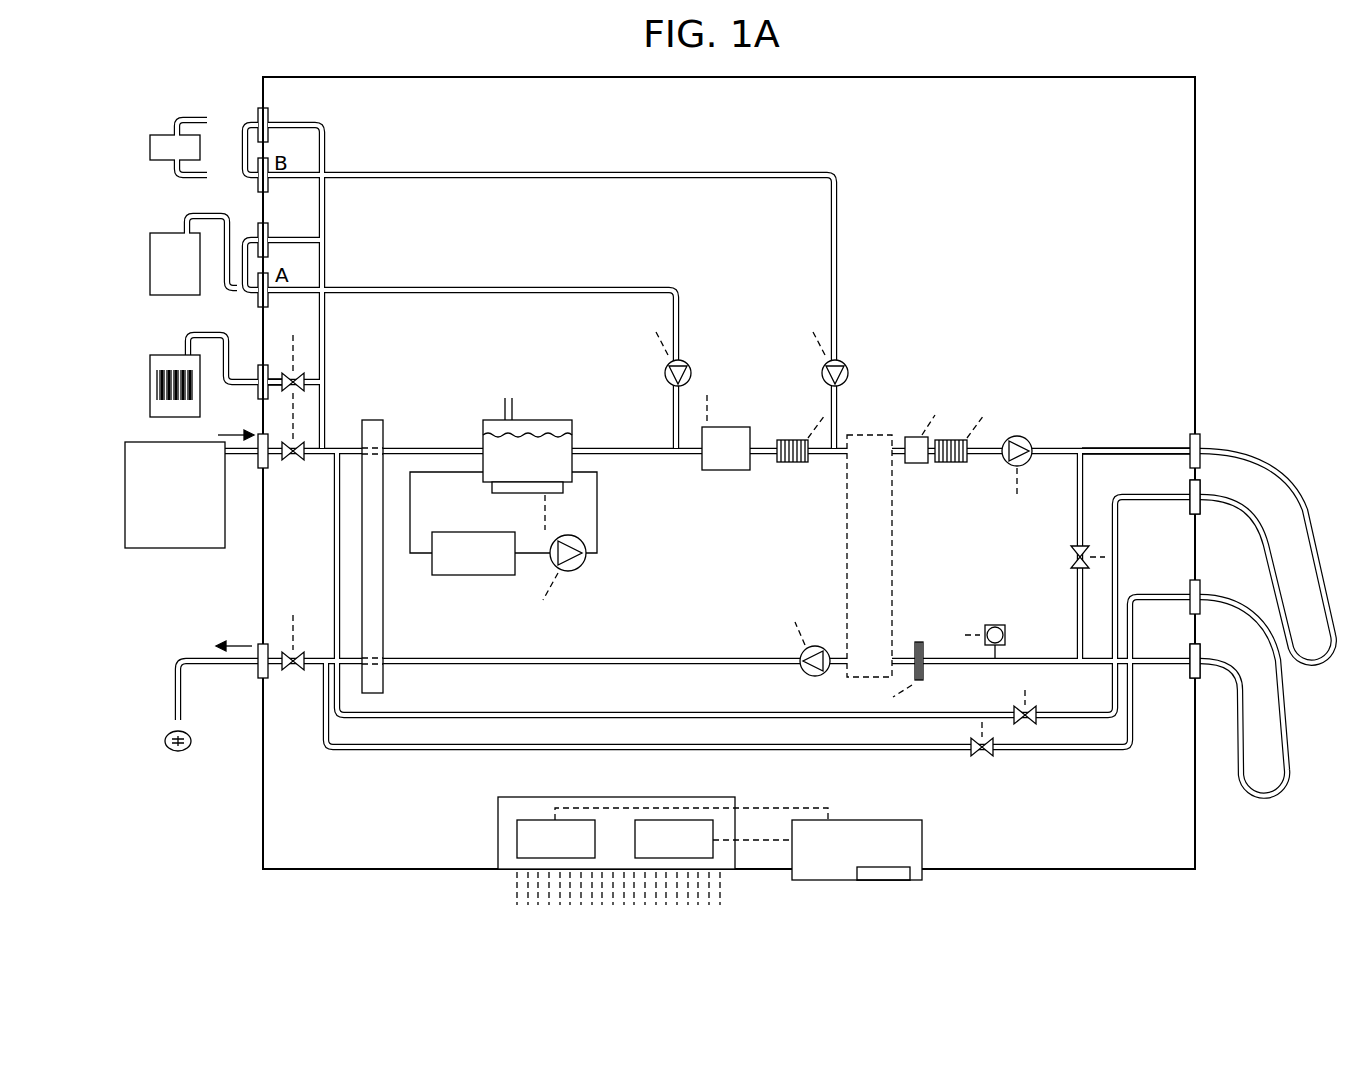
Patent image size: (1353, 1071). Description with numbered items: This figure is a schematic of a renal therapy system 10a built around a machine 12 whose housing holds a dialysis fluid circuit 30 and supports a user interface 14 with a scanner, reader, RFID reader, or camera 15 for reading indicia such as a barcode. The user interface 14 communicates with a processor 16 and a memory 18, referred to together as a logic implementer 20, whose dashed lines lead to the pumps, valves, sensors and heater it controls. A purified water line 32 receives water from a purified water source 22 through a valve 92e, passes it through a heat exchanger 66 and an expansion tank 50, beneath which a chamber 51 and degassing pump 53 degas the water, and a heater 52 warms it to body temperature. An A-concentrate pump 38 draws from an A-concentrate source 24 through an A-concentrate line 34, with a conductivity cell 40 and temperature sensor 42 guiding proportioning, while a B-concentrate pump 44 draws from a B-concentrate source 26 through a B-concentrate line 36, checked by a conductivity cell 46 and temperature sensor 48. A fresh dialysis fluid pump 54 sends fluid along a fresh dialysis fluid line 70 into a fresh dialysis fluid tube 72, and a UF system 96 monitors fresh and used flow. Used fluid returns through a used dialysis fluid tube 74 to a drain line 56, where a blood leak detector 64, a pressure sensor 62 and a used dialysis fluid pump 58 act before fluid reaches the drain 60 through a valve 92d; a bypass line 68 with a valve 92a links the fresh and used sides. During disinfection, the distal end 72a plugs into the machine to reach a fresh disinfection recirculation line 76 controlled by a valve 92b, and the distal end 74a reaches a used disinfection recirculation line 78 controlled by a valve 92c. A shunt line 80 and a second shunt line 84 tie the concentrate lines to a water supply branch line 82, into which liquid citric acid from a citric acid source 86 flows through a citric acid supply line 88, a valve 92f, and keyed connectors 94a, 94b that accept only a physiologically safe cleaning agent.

The system 10a is at (300, 49).
The machine 12 is at (1197, 77).
The user interface 14 is at (816, 860).
The scanner, reader, RFID reader, or camera 15 is at (155, 385).
The processor 16 is at (543, 856).
The memory 18 is at (661, 856).
The logic implementer 20 is at (498, 830).
The purified water device or source 22 is at (178, 548).
The A-concentrate source 24 is at (150, 268).
The B-concentrate source 26 is at (150, 150).
The dialysis fluid circuit 30 is at (1024, 198).
The purified water line 32 is at (633, 455).
The A-concentrate line 34 is at (597, 285).
The B-concentrate line 36 is at (705, 168).
The A-concentrate pump 38 is at (665, 377).
The conductivity cell 40 is at (793, 465).
The temperature sensor 42 is at (727, 473).
The B-concentrate pump 44 is at (822, 377).
The conductivity cell 46 is at (950, 464).
The temperature sensor 48 is at (917, 465).
The expansion tank 50 is at (513, 398).
The chamber 51 is at (475, 575).
The heater 52 is at (485, 488).
The degassing pump 53 is at (586, 564).
The fresh dialysis fluid pump 54 is at (1022, 436).
The drain line 56 is at (683, 657).
The used dialysis fluid pump 58 is at (800, 672).
The drain 60 is at (185, 752).
The pressure sensor 62 is at (1005, 627).
The blood leak detector 64 is at (920, 640).
The heat exchanger 66 is at (385, 628).
The bypass line 68 is at (1078, 512).
The fresh dialysis fluid line 70 is at (1130, 446).
The fresh dialysis fluid tube 72 is at (1255, 453).
The distal end 72a is at (1210, 503).
The used dialysis fluid tube 74 is at (1290, 772).
The distal end 74a is at (1208, 602).
The fresh disinfection recirculation line 76 is at (332, 565).
The used disinfection recirculation line 78 is at (378, 752).
The shunt line 80 is at (248, 237).
The water supply branch line 82 is at (328, 258).
The second shunt line 84 is at (248, 120).
The citric acid source 86 is at (152, 400).
The citric acid supply line 88 is at (186, 343).
The valve 92a is at (1070, 560).
The valve 92b is at (1023, 704).
The valve 92c is at (983, 758).
The valve 92d is at (295, 672).
The valve 92e is at (294, 462).
The valve 92f is at (299, 398).
The connector 94a is at (258, 369).
The mating connector 94b is at (286, 369).
The UF system 96 is at (880, 433).